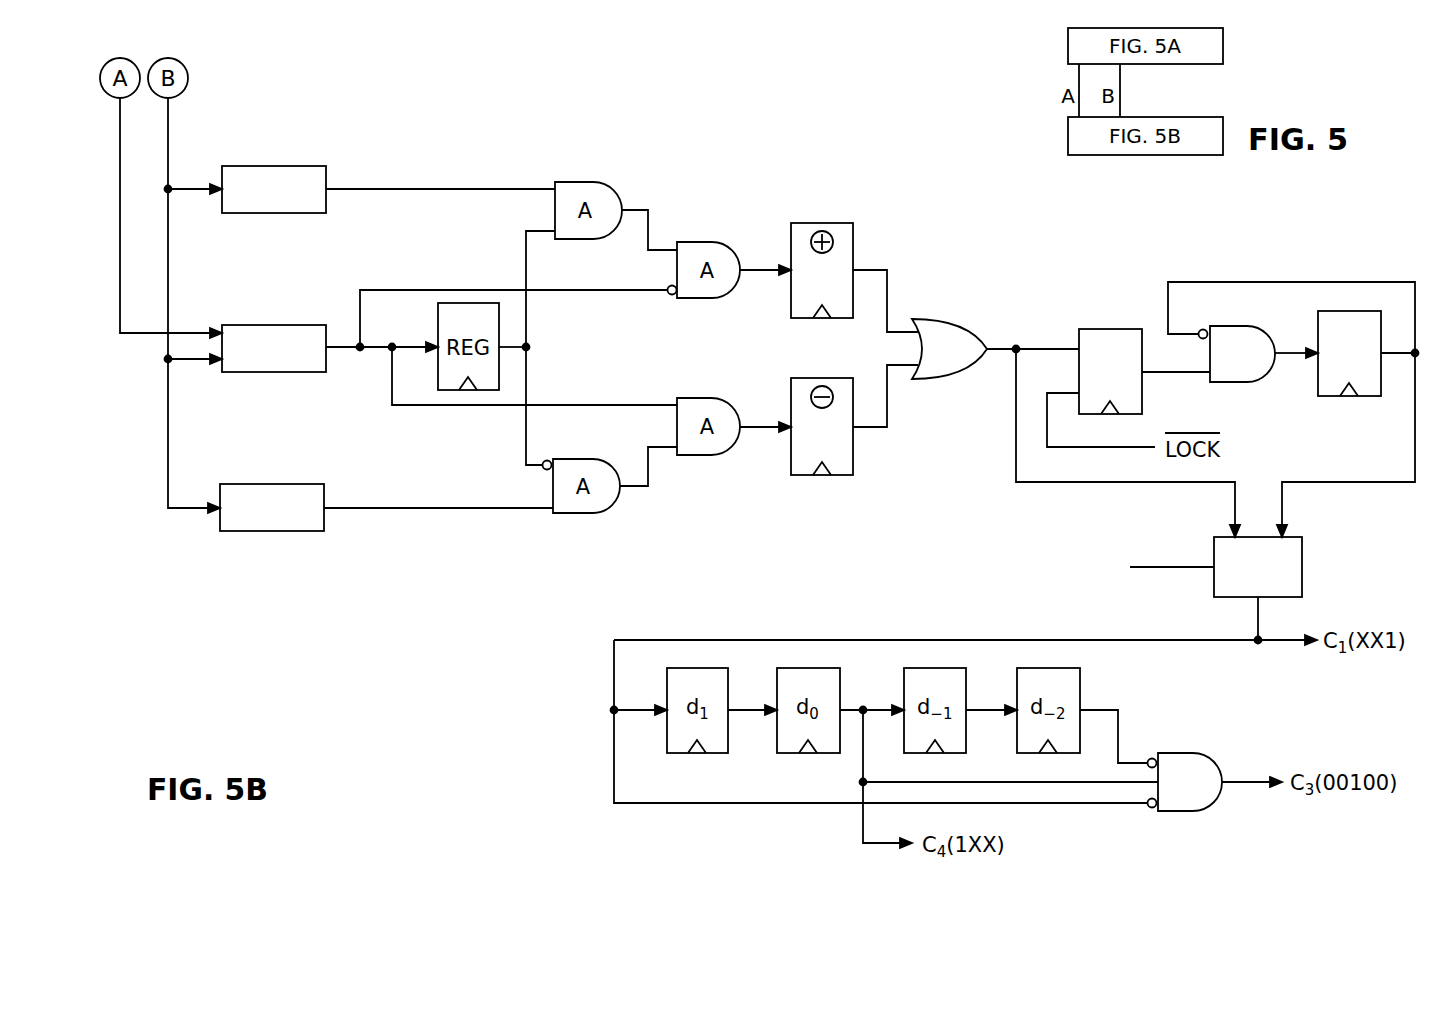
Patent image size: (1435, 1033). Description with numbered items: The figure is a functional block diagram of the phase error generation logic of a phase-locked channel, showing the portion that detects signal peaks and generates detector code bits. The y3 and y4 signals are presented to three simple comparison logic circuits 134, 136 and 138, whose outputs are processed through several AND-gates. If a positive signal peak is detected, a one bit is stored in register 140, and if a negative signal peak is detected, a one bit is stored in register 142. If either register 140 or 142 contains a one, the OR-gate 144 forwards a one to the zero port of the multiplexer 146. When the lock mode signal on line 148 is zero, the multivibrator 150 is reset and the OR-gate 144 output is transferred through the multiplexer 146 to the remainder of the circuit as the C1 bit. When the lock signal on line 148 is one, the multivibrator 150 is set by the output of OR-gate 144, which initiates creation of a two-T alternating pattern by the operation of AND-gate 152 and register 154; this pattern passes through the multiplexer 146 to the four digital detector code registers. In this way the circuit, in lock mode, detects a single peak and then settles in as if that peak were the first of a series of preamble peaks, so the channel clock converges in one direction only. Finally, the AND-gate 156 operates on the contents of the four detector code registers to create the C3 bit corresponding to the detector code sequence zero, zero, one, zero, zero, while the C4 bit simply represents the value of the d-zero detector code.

The comparison logic circuit 134 is at (287, 325).
The comparison logic circuit 136 is at (287, 484).
The comparison logic circuit 138 is at (287, 166).
The register 140 is at (830, 223).
The register 142 is at (842, 475).
The OR-gate 144 is at (972, 319).
The multiplexer 146 is at (1302, 562).
The lock mode signal line 148 is at (1165, 567).
The multivibrator 150 is at (1115, 329).
The AND-gate 152 is at (1265, 381).
The register 154 is at (1367, 396).
The AND-gate 156 is at (1195, 753).